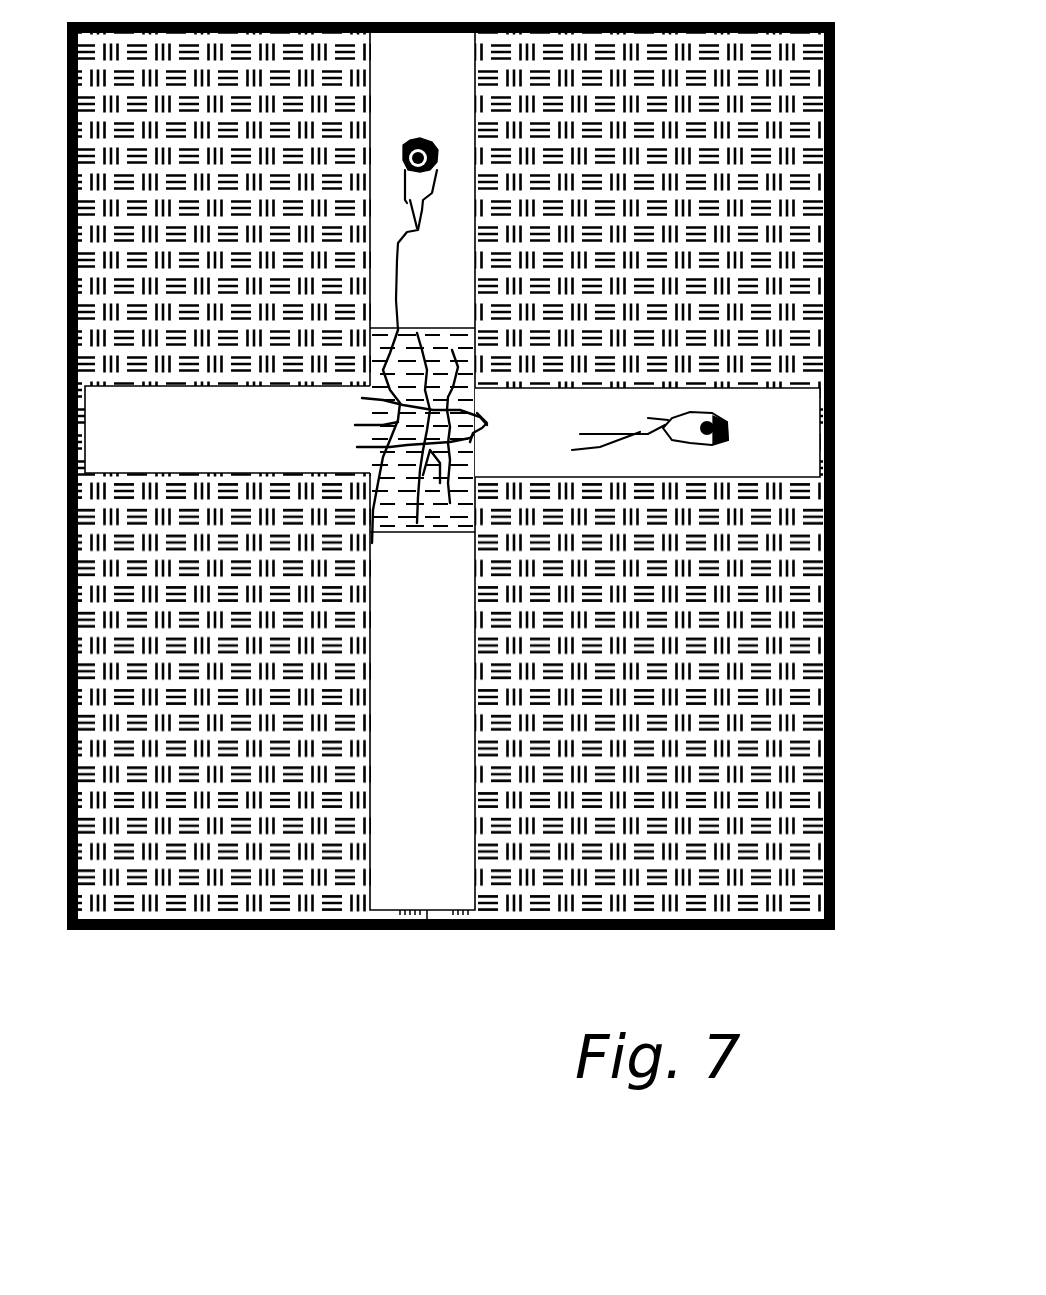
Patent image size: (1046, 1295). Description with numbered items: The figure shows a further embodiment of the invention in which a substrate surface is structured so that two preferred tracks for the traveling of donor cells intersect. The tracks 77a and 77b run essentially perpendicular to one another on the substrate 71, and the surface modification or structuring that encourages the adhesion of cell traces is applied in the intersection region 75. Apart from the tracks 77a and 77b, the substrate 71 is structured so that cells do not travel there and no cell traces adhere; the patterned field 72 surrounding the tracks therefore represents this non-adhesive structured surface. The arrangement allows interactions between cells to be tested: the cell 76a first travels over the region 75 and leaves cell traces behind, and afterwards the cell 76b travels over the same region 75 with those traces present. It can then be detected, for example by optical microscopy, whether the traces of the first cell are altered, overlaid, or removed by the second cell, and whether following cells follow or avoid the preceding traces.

The substrate 71 is at (283, 890).
The second layer 72 is at (745, 685).
The intersection region 75 is at (423, 530).
The cell 76a is at (733, 412).
The cell 76b is at (428, 143).
The track 77a is at (253, 447).
The track 77b is at (448, 655).